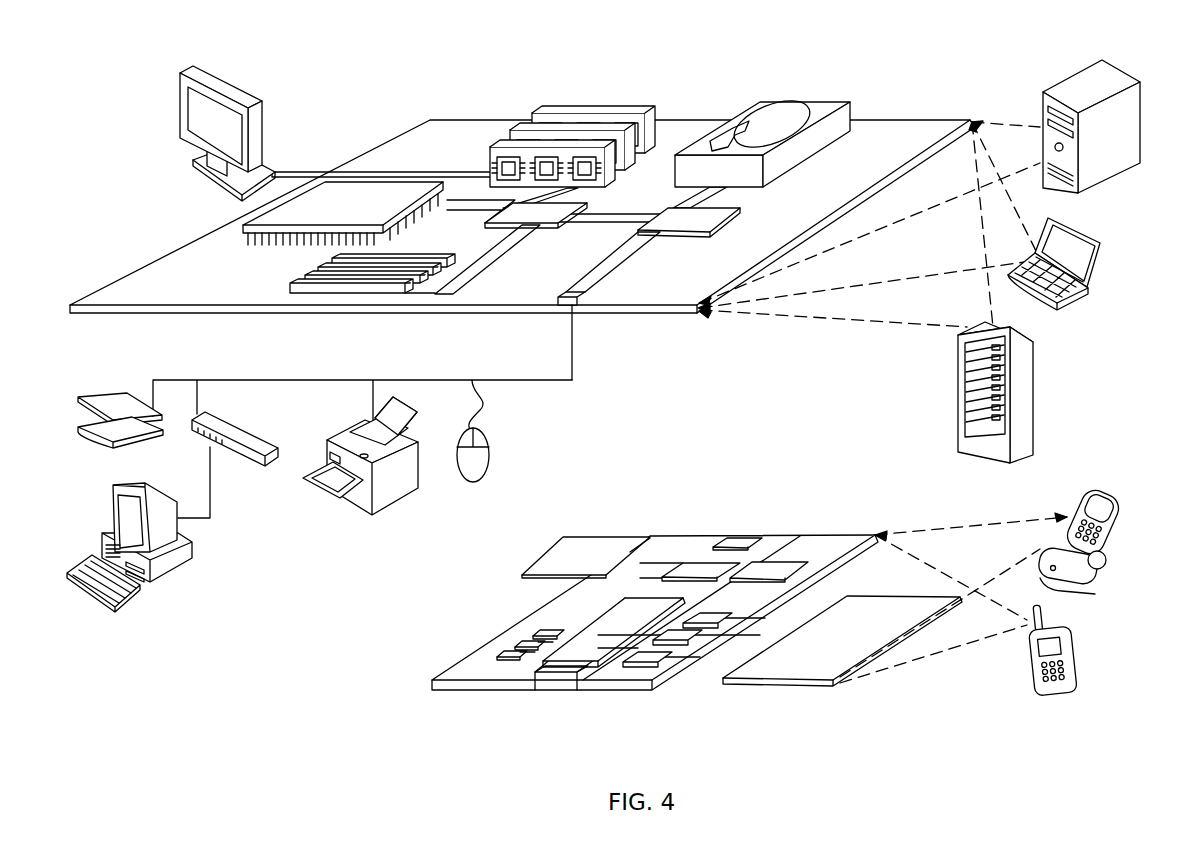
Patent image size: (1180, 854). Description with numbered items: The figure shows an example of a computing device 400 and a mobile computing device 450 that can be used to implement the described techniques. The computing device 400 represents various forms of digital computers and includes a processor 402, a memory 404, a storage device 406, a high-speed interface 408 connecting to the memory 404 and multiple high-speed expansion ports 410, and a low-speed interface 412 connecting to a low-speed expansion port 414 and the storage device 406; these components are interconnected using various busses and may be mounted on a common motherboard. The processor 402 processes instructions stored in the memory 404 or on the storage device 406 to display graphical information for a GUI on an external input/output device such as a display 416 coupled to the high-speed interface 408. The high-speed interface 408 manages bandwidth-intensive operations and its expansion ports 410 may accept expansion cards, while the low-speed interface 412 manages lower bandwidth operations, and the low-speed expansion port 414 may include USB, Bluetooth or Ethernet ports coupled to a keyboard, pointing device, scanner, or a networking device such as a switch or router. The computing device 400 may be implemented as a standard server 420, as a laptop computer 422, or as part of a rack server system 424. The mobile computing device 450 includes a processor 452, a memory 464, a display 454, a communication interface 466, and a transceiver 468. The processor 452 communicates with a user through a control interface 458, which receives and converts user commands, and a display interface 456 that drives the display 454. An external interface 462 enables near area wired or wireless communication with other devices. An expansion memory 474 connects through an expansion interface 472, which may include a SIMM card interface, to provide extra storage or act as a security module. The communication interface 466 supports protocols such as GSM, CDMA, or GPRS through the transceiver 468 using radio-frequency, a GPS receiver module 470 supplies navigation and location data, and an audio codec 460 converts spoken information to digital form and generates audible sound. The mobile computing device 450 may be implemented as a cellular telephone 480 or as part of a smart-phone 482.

The computing device 400 is at (358, 98).
The processor 402 is at (245, 228).
The memory 404 is at (548, 123).
The storage device 406 is at (758, 102).
The high-speed interface 408 is at (498, 212).
The high-speed expansion ports 410 is at (300, 281).
The low-speed interface 412 is at (671, 222).
The low-speed expansion port 414 is at (577, 303).
The display 416 is at (181, 74).
The standard server 420 is at (1041, 108).
The laptop computer 422 is at (1107, 240).
The rack server system 424 is at (957, 418).
The mobile computing device 450 is at (408, 687).
The processor 452 is at (591, 658).
The display 454 is at (806, 666).
The display interface 456 is at (652, 660).
The control interface 458 is at (684, 640).
The audio codec 460 is at (705, 620).
The external interface 462 is at (558, 686).
The memory 464 is at (518, 643).
The communication interface 466 is at (700, 572).
The transceiver 468 is at (768, 568).
The GPS receiver module 470 is at (740, 545).
The expansion interface 472 is at (634, 549).
The expansion memory 474 is at (572, 568).
The cellular telephone 480 is at (1088, 496).
The smart-phone 482 is at (1033, 655).